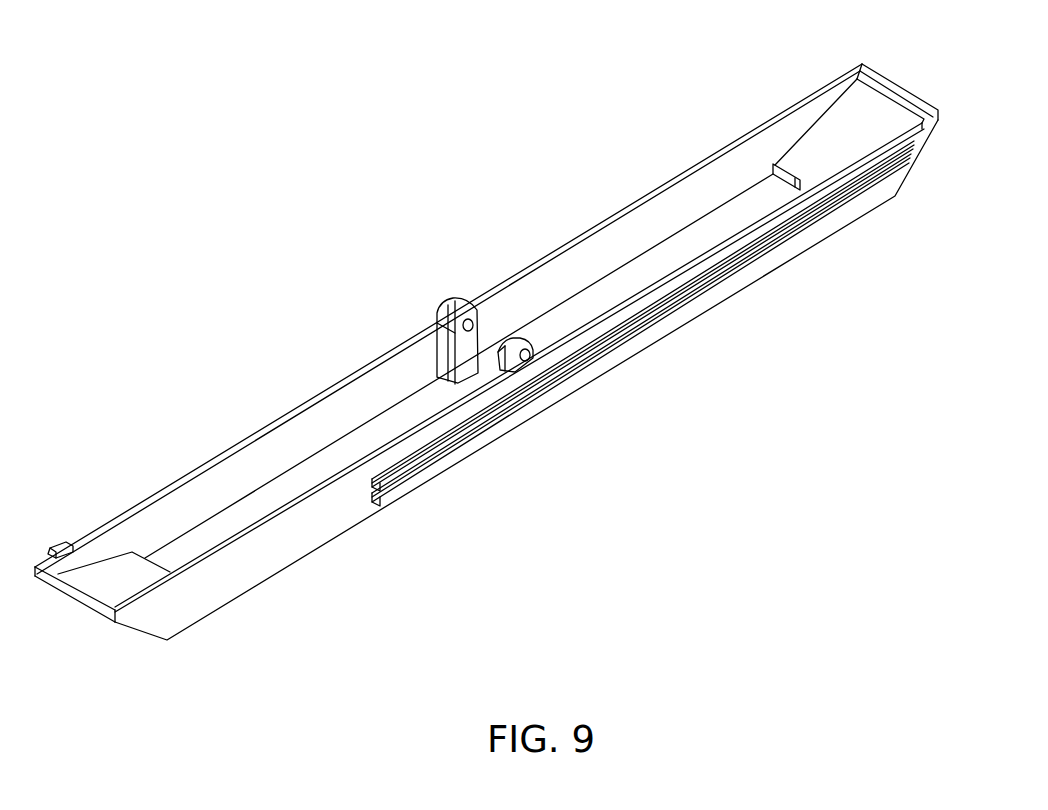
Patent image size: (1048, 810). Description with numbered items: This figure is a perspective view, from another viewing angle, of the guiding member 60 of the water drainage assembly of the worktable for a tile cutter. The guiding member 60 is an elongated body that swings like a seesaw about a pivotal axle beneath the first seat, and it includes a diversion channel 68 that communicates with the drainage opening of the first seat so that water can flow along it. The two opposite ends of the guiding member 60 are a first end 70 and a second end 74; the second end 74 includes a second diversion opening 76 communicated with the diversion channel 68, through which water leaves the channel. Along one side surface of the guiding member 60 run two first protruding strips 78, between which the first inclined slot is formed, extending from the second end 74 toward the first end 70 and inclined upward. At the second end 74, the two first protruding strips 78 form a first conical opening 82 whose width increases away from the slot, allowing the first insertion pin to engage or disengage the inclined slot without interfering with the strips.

The guiding member 60 is at (430, 212).
The diversion channel 68 is at (620, 290).
The first end 70 is at (65, 595).
The second end 74 is at (903, 87).
The second diversion opening 76 is at (795, 178).
The first protruding strips 78 is at (488, 426).
The first conical opening 82 is at (883, 188).